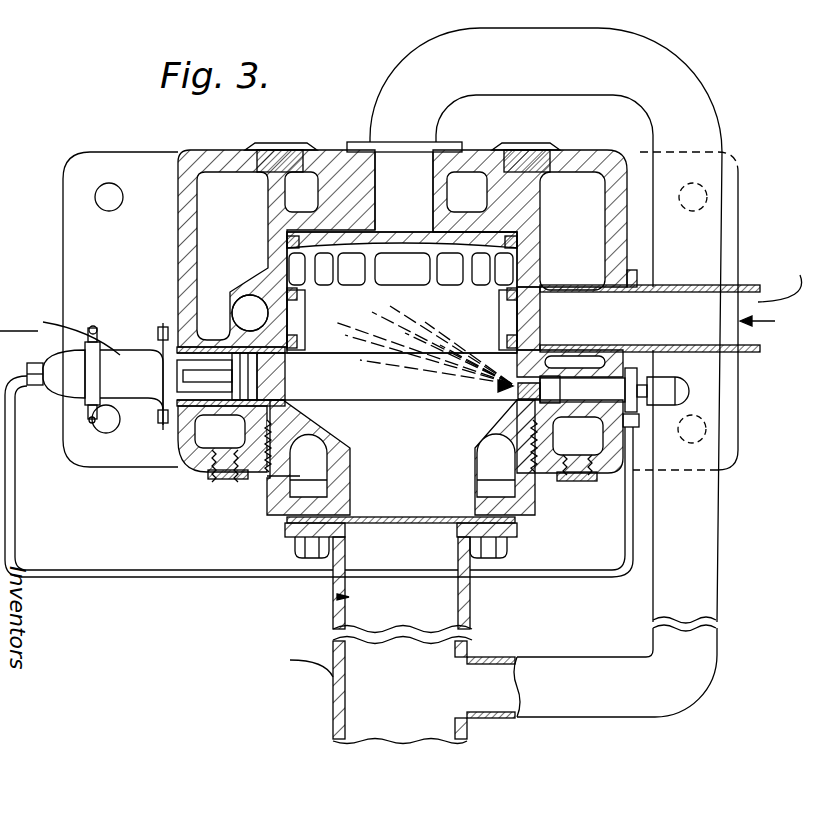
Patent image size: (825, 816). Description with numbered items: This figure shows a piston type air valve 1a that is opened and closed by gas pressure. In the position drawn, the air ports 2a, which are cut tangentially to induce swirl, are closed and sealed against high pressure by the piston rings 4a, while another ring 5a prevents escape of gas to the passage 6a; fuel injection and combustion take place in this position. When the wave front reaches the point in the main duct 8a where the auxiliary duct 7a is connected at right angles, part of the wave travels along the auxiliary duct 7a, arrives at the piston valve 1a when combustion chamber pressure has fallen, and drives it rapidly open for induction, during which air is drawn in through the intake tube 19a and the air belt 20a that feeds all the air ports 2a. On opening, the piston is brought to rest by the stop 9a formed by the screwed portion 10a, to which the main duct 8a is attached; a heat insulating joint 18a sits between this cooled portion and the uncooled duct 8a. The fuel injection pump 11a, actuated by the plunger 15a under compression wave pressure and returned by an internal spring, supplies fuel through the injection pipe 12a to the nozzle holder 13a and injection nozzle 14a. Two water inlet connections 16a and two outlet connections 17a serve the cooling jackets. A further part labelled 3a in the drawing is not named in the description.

The piston type air valve 1a is at (305, 308).
The air ports 2a is at (520, 334).
The bearing ring 3a is at (242, 317).
The piston rings 4a is at (533, 312).
The ring 5a is at (290, 248).
The passage 6a is at (432, 204).
The auxiliary duct 7a is at (690, 95).
The main duct 8a is at (432, 607).
The stop 9a is at (290, 402).
The screwed portion 10a is at (340, 446).
The fuel injection pump 11a is at (155, 391).
The injection pipe 12a is at (143, 570).
The nozzle holder 13a is at (632, 403).
The injection nozzle 14a is at (570, 436).
The plunger 15a is at (231, 412).
The water inlet connections 16a is at (522, 150).
The outlet connections 17a is at (207, 480).
The heat insulating joint 18a is at (460, 515).
The intake tube 19a is at (597, 318).
The air belt 20a is at (232, 320).